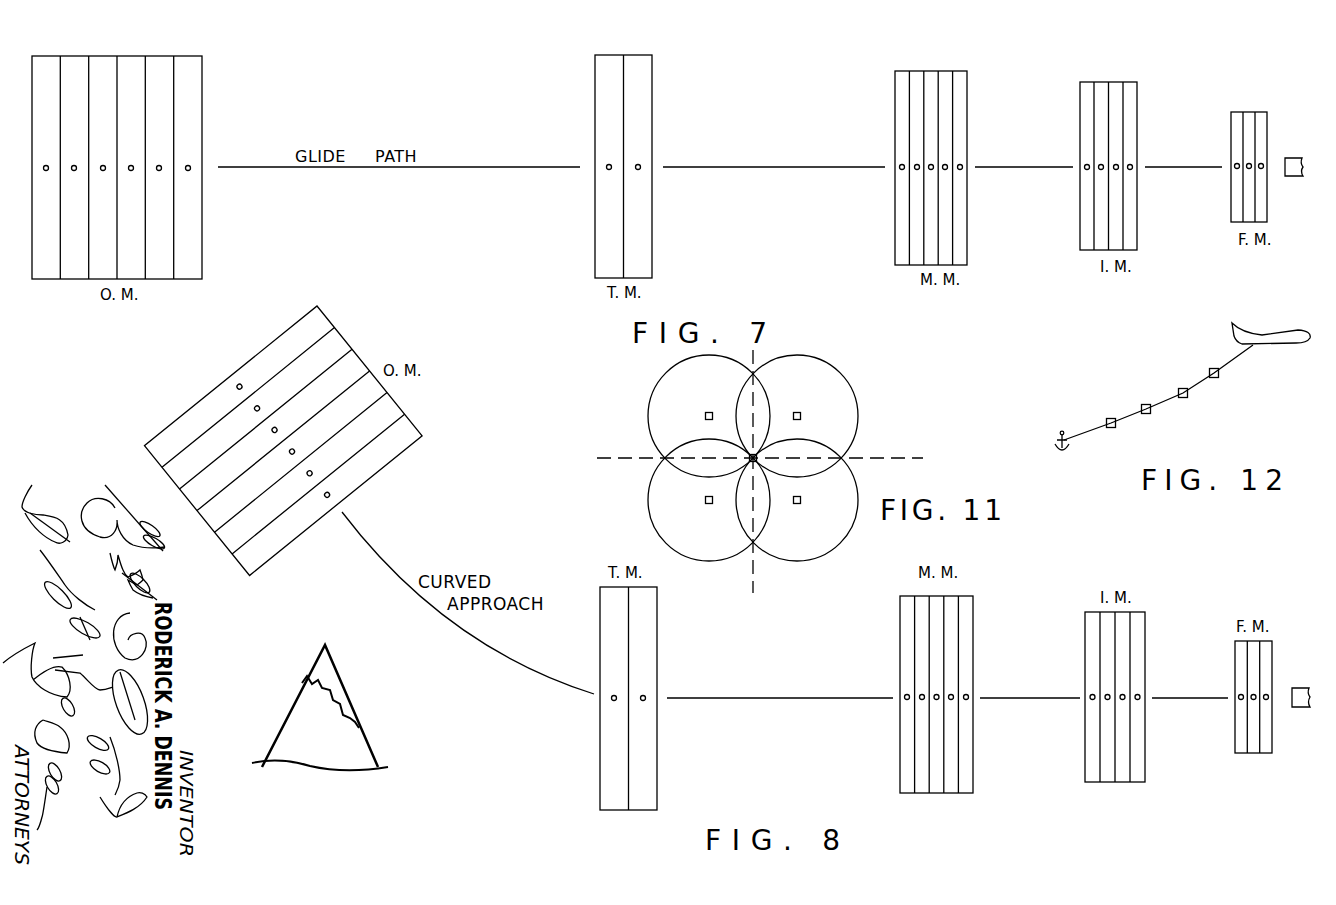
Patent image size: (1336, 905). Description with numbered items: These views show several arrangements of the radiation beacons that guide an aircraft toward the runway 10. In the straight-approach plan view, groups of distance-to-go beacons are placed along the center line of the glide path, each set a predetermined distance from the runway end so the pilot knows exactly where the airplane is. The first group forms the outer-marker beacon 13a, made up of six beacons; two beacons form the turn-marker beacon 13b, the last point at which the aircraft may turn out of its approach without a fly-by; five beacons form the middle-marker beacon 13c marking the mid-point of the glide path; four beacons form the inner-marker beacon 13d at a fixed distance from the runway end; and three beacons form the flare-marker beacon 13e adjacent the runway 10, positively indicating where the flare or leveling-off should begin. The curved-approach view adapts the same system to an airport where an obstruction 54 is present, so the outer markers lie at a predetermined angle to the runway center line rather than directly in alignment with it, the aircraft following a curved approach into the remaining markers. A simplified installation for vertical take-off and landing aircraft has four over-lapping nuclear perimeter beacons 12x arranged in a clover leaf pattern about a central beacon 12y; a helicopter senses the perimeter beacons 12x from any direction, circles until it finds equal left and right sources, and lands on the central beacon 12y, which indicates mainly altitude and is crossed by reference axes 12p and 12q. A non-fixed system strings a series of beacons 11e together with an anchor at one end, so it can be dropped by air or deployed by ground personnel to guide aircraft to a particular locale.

In FIG. 7, the outer-marker beacon 13a is at (163, 166).
In FIG. 7, the turn-marker beacon 13b is at (639, 164).
In FIG. 7, the middle-marker beacon 13c is at (960, 164).
In FIG. 7, the inner-marker beacon 13d is at (1130, 164).
In FIG. 7, the flare-marker beacon 13e is at (1263, 165).
In FIG. 7, the runway 10 is at (1295, 177).
In FIG. 8, the runway 10 is at (1300, 687).
In FIG. 8, the obstruction 54 is at (359, 727).
In FIG. 11, the perimeter beacons 12x is at (801, 416).
In FIG. 11, the central beacon 12y is at (750, 456).
In FIG. 11, the horizontal reference axis 12p is at (914, 456).
In FIG. 11, the vertical reference axis 12q is at (756, 584).
In FIG. 12, the approach path beacons 11e is at (1112, 428).